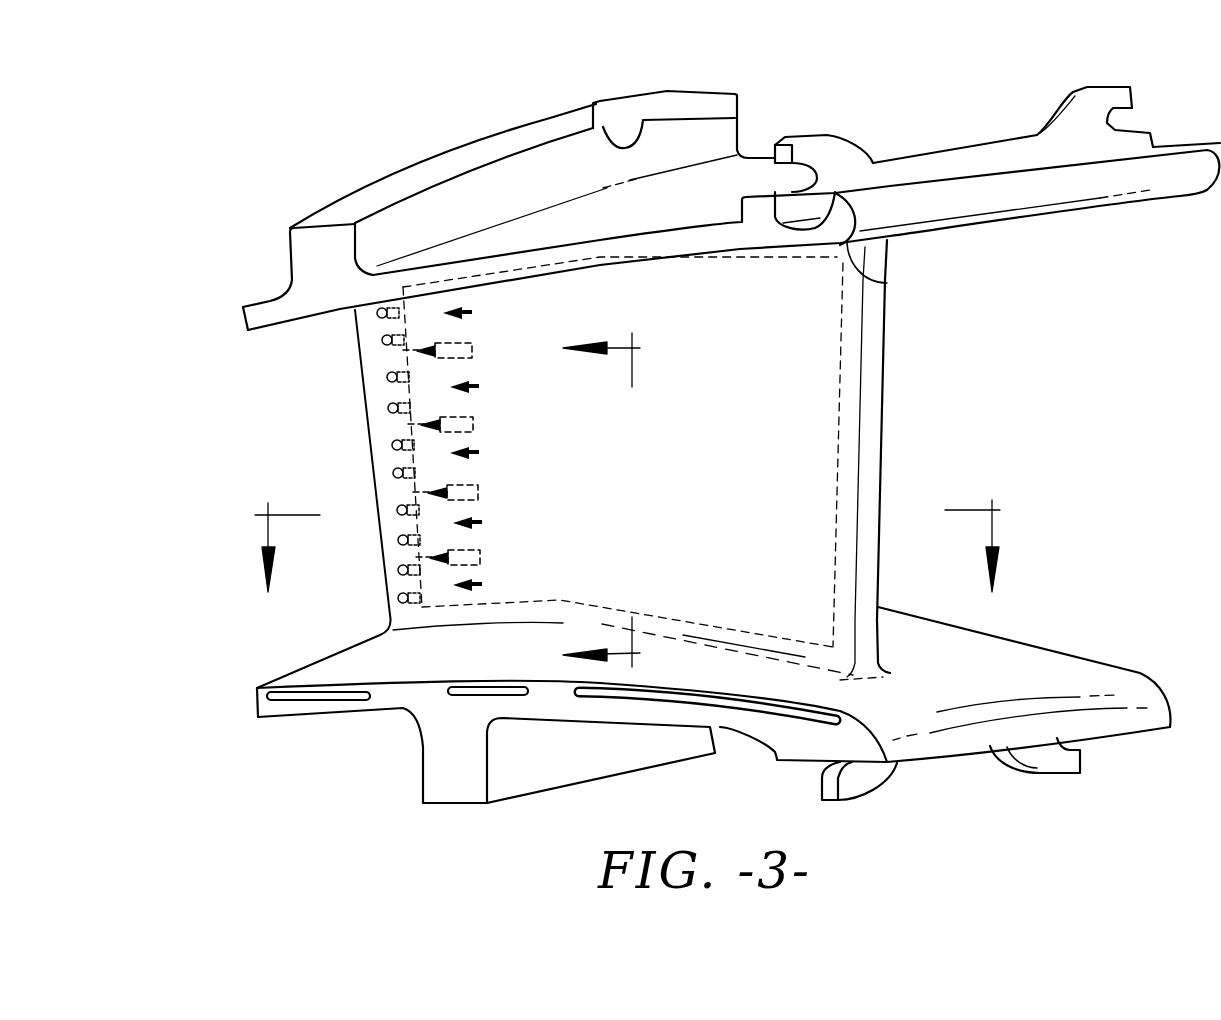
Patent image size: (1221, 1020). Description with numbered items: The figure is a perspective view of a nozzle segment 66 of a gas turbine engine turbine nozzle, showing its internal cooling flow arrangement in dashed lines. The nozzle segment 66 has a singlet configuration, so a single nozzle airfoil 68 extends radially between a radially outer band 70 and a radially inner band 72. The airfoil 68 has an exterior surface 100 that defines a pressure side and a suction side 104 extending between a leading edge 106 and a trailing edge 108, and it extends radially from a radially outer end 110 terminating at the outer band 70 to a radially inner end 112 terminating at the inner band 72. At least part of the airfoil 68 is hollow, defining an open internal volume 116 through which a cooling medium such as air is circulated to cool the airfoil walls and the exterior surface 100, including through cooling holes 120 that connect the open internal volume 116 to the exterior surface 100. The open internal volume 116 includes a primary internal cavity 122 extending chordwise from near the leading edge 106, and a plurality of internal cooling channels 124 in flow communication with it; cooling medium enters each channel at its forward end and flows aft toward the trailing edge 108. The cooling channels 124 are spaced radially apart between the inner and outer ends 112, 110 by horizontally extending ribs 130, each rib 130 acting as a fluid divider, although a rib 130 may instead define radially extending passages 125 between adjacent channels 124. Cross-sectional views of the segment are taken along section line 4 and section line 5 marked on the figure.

The nozzle segment 66 is at (314, 137).
The radially outer band 70 is at (723, 120).
The radially inner band 72 is at (553, 700).
The nozzle airfoil 68 is at (995, 377).
The exterior surface 100 is at (785, 348).
The suction side 104 is at (750, 603).
The leading edge 106 is at (883, 480).
The trailing edge 108 is at (372, 432).
The radially outer end 110 is at (887, 275).
The radially inner end 112 is at (477, 623).
The open internal volume 116 is at (852, 525).
The cooling holes 120 is at (390, 338).
The primary internal cavity 122 is at (785, 420).
The internal cooling channels 124 is at (470, 311).
The radially extending passages 125 is at (417, 352).
The horizontally extending ribs 130 is at (477, 345).
The section line 4- 4 is at (626, 546).
The section line 5- 5 is at (708, 493).